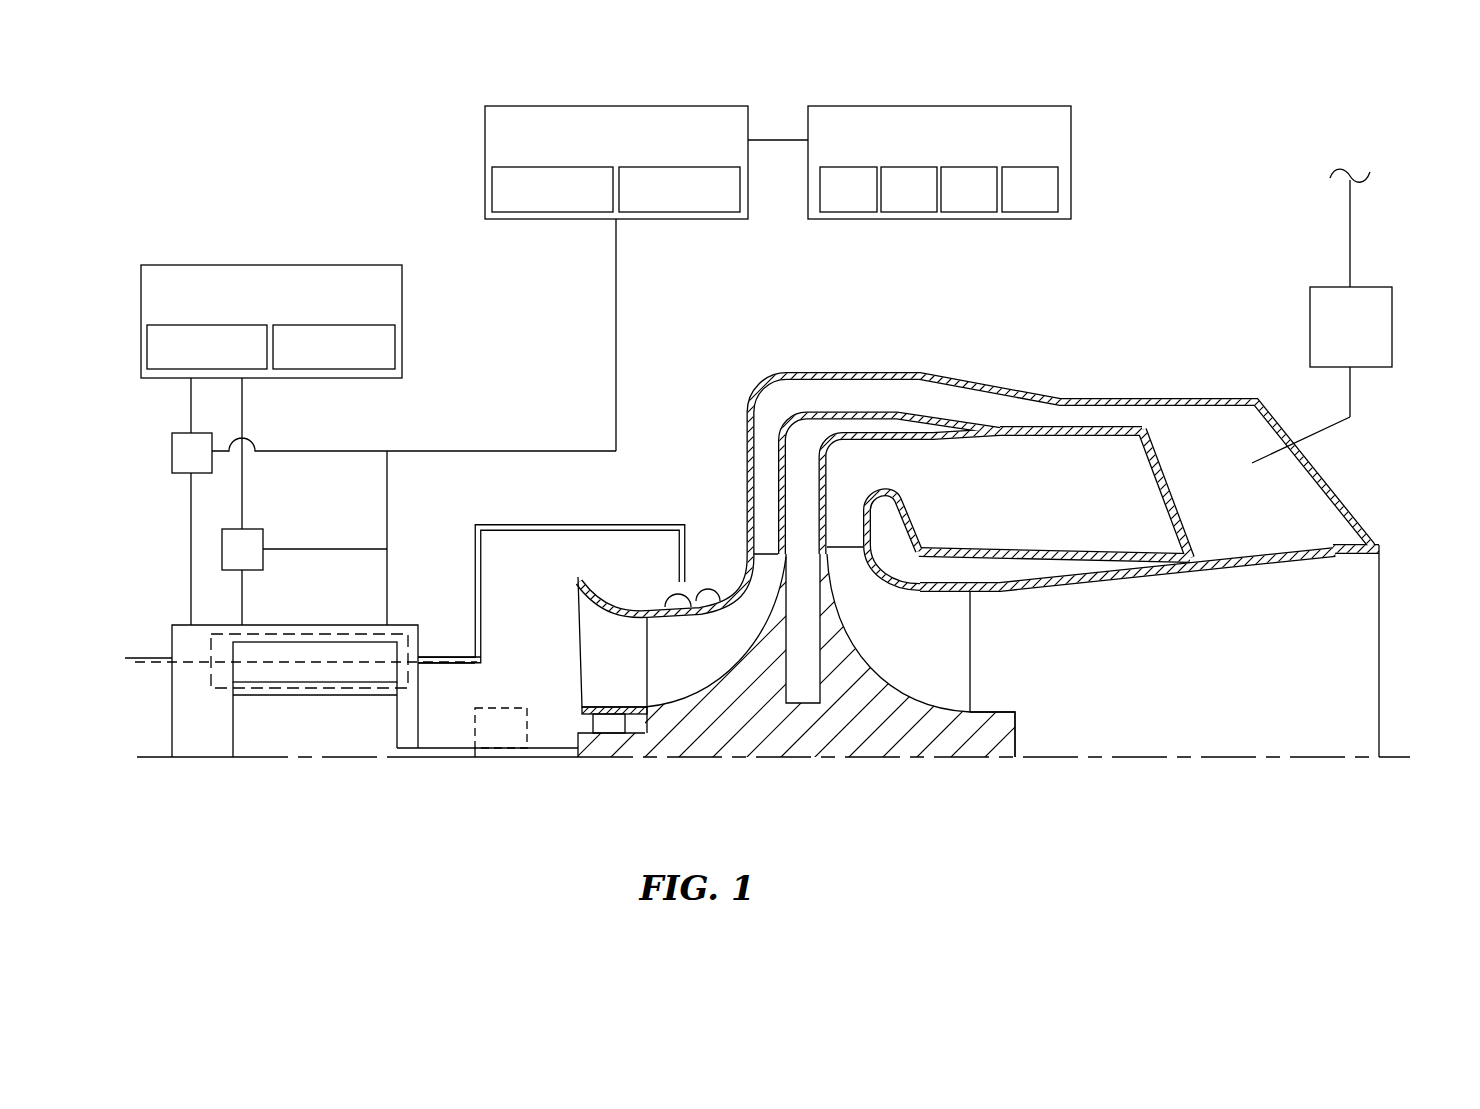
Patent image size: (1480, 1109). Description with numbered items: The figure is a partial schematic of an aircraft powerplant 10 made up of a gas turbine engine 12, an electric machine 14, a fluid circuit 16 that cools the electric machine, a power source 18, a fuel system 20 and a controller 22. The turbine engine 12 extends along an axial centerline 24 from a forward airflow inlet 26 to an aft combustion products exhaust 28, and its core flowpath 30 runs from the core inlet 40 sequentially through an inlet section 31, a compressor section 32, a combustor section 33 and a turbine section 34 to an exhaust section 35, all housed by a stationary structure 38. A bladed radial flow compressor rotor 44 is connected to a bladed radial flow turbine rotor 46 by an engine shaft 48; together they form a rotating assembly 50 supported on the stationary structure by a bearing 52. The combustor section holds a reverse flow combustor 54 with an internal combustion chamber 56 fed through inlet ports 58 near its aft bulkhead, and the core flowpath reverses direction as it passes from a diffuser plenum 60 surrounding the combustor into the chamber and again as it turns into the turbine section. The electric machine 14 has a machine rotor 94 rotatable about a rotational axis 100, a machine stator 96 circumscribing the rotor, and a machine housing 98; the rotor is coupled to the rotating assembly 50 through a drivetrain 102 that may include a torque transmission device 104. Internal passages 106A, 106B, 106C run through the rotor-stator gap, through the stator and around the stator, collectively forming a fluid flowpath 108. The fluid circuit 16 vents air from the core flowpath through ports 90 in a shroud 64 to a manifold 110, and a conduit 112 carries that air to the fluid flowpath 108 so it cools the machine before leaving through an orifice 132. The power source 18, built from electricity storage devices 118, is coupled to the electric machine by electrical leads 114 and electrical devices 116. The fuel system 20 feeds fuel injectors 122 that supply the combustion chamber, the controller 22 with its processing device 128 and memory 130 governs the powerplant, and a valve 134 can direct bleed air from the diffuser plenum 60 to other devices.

The powerplant 10 is at (178, 175).
The gas turbine engine 12 is at (1143, 276).
The electric machine 14 is at (150, 608).
The fluid circuit 16 is at (680, 480).
The power source 18 is at (361, 303).
The fuel system 20 is at (1021, 145).
The controller 22 is at (689, 145).
The axial centerline 24 is at (1318, 762).
The airflow inlet 26 is at (578, 647).
The combustion products exhaust 28 is at (1380, 632).
The core flowpath 30 is at (1106, 662).
The inlet section 31 is at (613, 590).
The compressor section 32 is at (725, 563).
The combustor section 33 is at (1193, 380).
The turbine section 34 is at (996, 661).
The exhaust section 35 is at (1365, 525).
The stationary structure 38 is at (842, 370).
The airflow inlet 40 is at (582, 647).
The compressor rotor 44 is at (700, 727).
The turbine rotor 46 is at (853, 725).
The engine shaft 48 is at (790, 740).
The engine rotating assembly 50 is at (1022, 738).
The bearing 52 is at (608, 730).
The combustor 54 is at (1010, 420).
The combustion chamber 56 is at (1011, 512).
The inlet ports 58 is at (1097, 435).
The diffuser plenum 60 is at (1226, 511).
The shroud 64 is at (660, 608).
The ports 90 is at (688, 616).
The electric machine rotor 94 is at (299, 736).
The electric machine stator 96 is at (232, 670).
The electric machine housing 98 is at (278, 625).
The rotational axis 100 is at (190, 760).
The drivetrain 102 is at (443, 775).
The torque transmission device 104 is at (486, 742).
The internal passage 106A is at (357, 690).
The internal passage 106B is at (280, 662).
The internal passage 106C is at (400, 633).
The fluid flowpath 108 is at (192, 650).
The manifold 110 is at (704, 614).
The conduit 112 is at (533, 525).
The electrical leads 114 is at (190, 405).
The electrical devices 116 is at (178, 467).
The electricity storage devices 118 is at (190, 361).
The fuel injectors 122 is at (834, 203).
The processing device 128 is at (535, 203).
The memory 130 is at (663, 203).
The orifice 132 is at (125, 659).
The valve 134 is at (1333, 357).